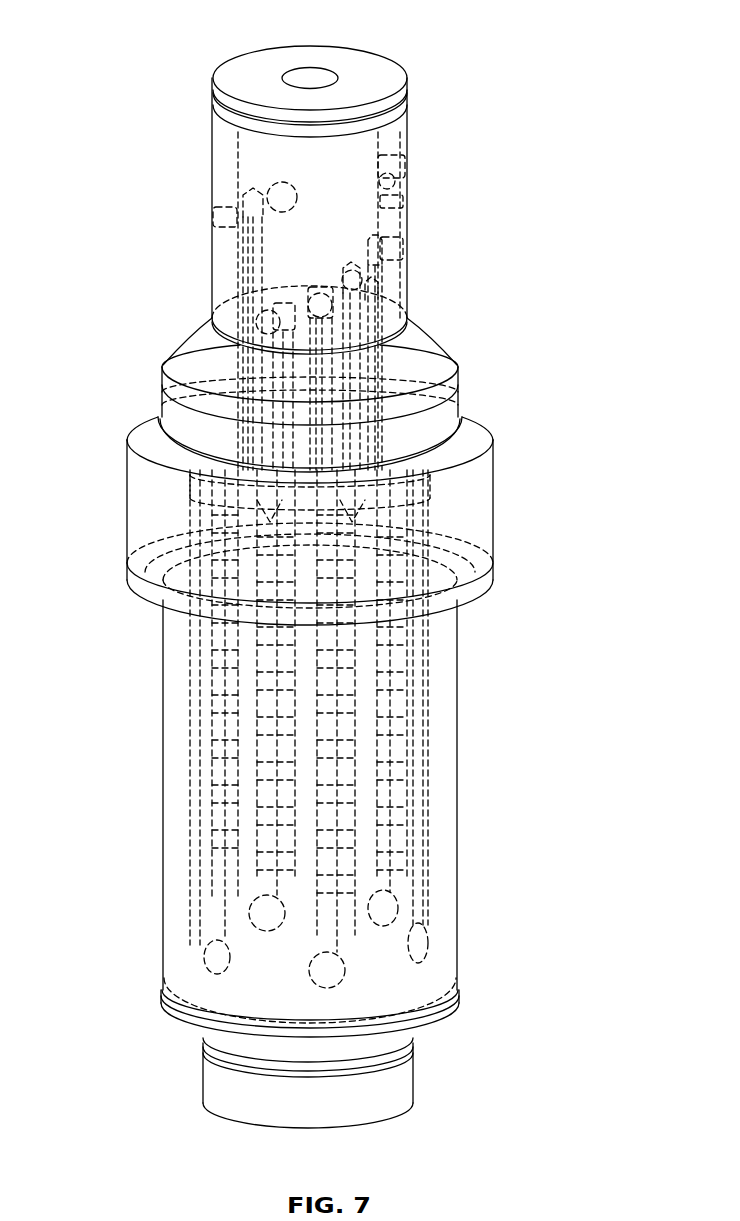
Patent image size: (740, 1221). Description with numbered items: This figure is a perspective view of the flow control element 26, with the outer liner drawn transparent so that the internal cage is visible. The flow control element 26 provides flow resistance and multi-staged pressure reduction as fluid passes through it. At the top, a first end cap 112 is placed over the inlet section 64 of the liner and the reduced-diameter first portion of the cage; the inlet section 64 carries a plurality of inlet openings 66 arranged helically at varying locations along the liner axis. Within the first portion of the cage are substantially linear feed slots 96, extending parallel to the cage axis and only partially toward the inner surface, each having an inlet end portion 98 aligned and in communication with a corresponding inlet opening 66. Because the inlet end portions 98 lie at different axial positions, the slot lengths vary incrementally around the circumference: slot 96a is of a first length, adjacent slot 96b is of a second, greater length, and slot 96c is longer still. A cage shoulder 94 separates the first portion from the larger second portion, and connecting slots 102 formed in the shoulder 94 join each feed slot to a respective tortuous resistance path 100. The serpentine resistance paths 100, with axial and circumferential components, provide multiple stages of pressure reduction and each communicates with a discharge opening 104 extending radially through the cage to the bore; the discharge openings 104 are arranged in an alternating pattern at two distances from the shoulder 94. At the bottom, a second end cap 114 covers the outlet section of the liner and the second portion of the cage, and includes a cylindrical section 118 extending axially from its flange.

The flow control element 26 is at (482, 96).
The first end cap 112 is at (233, 69).
The inlet section 64 is at (209, 268).
The inlet openings 66 is at (400, 252).
The inlet end portion 98 is at (343, 306).
The feed slots 96 is at (318, 378).
The feed slot 96b is at (310, 405).
The feed slot 96a is at (285, 386).
The feed slot 96c is at (360, 388).
The connecting slot 102 is at (463, 462).
The cage shoulder 94 is at (222, 472).
The tortuous resistance paths 100 is at (392, 722).
The discharge opening 104 is at (417, 947).
The second end cap 114 is at (429, 1036).
The cylindrical section 118 is at (218, 1075).